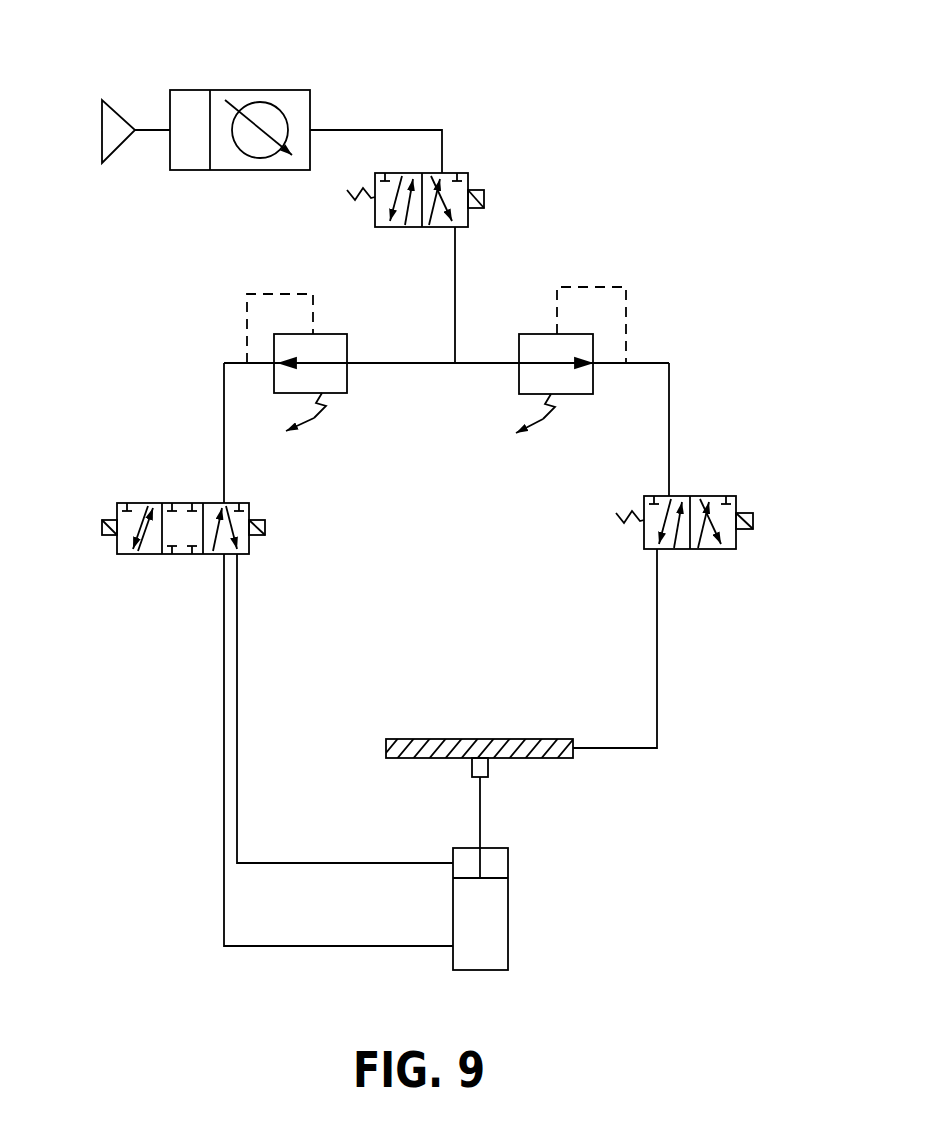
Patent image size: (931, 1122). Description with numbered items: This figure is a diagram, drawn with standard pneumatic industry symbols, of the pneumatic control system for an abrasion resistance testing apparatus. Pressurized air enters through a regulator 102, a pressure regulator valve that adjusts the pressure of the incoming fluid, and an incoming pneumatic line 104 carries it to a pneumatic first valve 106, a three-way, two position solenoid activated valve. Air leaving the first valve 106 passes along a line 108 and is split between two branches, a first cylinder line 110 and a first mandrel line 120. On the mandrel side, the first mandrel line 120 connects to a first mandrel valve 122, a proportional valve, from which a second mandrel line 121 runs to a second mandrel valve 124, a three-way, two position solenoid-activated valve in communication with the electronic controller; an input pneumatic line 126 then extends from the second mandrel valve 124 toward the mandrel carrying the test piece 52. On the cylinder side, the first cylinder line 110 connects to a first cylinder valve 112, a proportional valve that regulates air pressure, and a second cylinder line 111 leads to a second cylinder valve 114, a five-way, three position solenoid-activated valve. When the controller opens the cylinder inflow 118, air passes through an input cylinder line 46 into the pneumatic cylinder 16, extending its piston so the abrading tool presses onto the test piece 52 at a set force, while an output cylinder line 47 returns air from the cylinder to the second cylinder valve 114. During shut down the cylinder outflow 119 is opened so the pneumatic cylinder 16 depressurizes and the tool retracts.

The regulator 102 is at (253, 90).
The incoming pneumatic line 104 is at (368, 128).
The first valve 106 is at (453, 173).
The line 108 is at (455, 277).
The first cylinder line 110 is at (420, 363).
The second cylinder line 111 is at (224, 412).
The first cylinder valve 112 is at (333, 334).
The second cylinder valve 114 is at (183, 503).
The cylinder inflow 118 is at (242, 515).
The cylinder outflow 119 is at (147, 554).
The first mandrel line 120 is at (485, 363).
The second mandrel line 121 is at (669, 432).
The first mandrel valve 122 is at (533, 334).
The second mandrel valve 124 is at (715, 496).
The input pneumatic line 126 is at (657, 682).
The test piece 52 is at (493, 739).
The pneumatic cylinder 16 is at (493, 920).
The output cylinder line 47 is at (237, 660).
The input cylinder line 46 is at (224, 770).